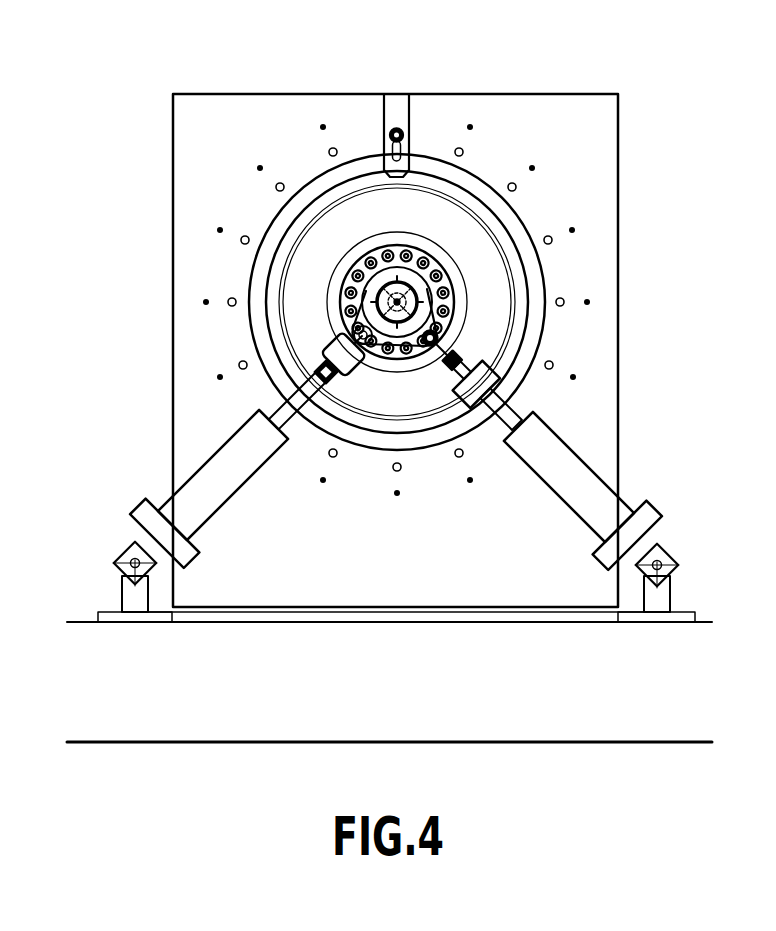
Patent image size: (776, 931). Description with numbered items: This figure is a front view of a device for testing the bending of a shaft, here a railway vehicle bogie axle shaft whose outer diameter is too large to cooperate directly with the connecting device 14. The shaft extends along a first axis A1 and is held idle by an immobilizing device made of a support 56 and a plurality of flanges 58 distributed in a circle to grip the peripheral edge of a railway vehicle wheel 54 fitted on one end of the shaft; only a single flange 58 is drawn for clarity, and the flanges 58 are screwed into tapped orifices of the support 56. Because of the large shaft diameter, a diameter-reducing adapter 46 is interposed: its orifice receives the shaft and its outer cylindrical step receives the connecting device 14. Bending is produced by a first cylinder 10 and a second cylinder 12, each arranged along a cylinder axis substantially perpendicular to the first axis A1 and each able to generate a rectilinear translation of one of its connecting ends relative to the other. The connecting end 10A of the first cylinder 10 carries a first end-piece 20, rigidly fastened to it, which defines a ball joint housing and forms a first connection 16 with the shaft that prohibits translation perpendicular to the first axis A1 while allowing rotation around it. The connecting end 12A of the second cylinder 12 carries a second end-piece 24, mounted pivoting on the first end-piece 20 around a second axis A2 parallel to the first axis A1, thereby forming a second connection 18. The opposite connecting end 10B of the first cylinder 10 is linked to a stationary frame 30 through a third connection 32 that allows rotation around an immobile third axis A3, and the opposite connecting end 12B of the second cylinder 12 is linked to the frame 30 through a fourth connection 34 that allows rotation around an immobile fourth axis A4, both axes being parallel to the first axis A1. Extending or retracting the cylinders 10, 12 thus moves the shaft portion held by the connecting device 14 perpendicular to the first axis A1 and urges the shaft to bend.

The first cylinder 10 is at (576, 468).
The connecting end of the first cylinder 10A is at (483, 354).
The connecting end of the first cylinder 10B is at (650, 545).
The second cylinder 12 is at (217, 468).
The connecting end of the second cylinder 12A is at (313, 352).
The connecting end of the second cylinder 12B is at (142, 545).
The connecting device 14 is at (330, 241).
The first connection 16 is at (381, 243).
The second connection 18 is at (380, 350).
The first end-piece 20 is at (343, 278).
The second end-piece 24 is at (322, 341).
The stationary frame 30 is at (595, 716).
The third connection 32 is at (636, 575).
The fourth connection 34 is at (156, 575).
The diameter-reducing adapter 46 is at (413, 290).
The railway vehicle wheel 54 is at (453, 208).
The support 56 is at (612, 168).
The flange 58 is at (416, 111).
The first axis A1 is at (409, 326).
The second axis A2 is at (354, 392).
The third axis A3 is at (664, 571).
The fourth axis A4 is at (128, 571).